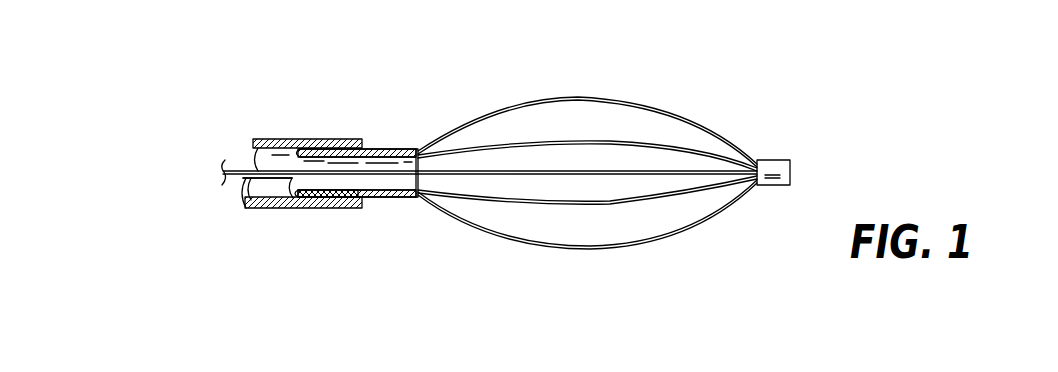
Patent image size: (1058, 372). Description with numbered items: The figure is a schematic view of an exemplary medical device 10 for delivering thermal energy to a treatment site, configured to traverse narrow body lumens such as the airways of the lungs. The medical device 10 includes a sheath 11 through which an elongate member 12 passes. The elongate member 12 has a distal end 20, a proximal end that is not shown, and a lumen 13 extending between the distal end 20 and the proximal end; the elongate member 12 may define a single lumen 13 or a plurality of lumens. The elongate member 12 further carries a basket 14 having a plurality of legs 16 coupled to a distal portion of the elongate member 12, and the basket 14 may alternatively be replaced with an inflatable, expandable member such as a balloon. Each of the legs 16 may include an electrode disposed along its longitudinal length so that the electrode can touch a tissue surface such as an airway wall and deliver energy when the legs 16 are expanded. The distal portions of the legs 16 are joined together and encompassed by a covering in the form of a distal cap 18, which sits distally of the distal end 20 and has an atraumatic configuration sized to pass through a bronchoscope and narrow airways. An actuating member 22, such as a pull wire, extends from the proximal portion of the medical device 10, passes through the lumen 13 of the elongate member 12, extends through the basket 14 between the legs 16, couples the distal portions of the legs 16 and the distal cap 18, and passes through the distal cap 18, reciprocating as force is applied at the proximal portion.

The medical device 10 is at (700, 56).
The sheath 11 is at (310, 208).
The elongate member 12 is at (388, 197).
The lumen 13 is at (355, 178).
The basket 14 is at (505, 111).
The legs 16 is at (643, 143).
The distal cap 18 is at (771, 167).
The distal end 20 is at (420, 151).
The actuating member 22 is at (555, 175).